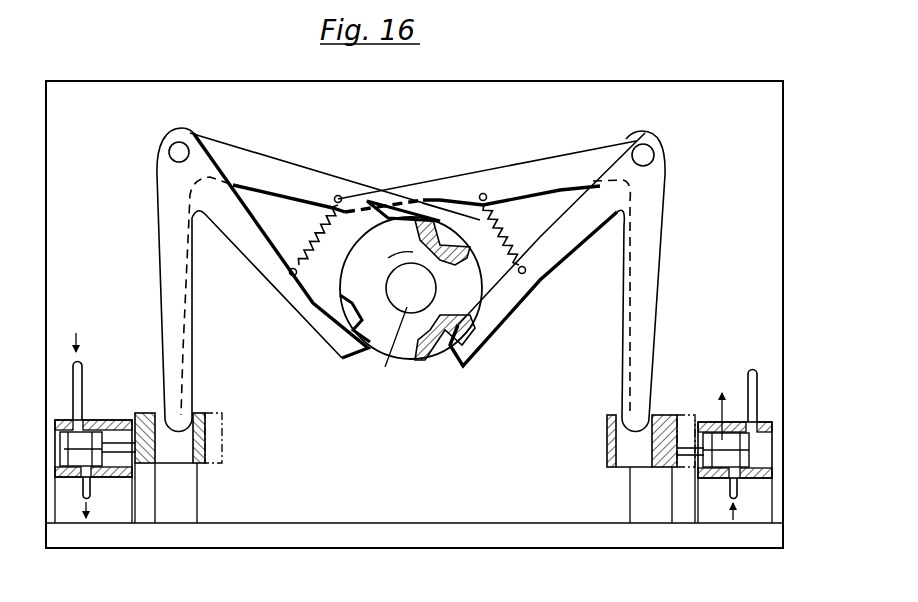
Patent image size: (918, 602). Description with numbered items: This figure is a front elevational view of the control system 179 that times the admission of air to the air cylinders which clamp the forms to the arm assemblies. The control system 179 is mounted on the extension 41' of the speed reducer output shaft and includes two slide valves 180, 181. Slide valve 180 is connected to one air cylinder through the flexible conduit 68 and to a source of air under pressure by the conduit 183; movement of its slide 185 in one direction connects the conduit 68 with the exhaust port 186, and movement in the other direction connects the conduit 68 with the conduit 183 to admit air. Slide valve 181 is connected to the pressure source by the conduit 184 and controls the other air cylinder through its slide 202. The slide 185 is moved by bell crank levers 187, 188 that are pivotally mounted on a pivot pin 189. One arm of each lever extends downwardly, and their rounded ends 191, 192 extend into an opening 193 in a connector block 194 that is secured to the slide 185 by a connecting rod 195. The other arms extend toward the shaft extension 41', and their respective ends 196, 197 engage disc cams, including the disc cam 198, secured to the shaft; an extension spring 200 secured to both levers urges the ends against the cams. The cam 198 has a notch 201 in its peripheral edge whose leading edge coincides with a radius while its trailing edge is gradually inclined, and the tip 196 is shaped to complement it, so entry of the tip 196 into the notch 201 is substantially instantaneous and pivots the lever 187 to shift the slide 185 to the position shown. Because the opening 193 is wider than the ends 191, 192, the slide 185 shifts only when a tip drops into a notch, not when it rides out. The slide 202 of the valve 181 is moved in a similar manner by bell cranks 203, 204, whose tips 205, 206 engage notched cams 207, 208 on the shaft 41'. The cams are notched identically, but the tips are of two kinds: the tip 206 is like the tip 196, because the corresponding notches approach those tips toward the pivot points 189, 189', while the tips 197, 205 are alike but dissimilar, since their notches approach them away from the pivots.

The control system 179 is at (571, 78).
The pivot point 189' is at (254, 267).
The pivot pin 189 is at (570, 271).
The bell crank 204 is at (292, 158).
The bell crank lever 188 is at (527, 162).
The end of lever 188 197 is at (390, 203).
The tip of bell crank 204 206 is at (450, 218).
The notched cam 208 is at (463, 232).
The extension spring 200 is at (512, 242).
The bell crank 203 is at (257, 266).
The notched cam 207 is at (345, 300).
The tip of bell crank 203 205 is at (348, 364).
The extension of output shaft 41' is at (411, 308).
The disc cam 198 is at (418, 372).
The notch 201 is at (445, 370).
The end of lever 187 196 is at (458, 362).
The bell crank lever 187 is at (485, 312).
The conduit 184 is at (85, 376).
The slide valve 181 is at (88, 420).
The slide 202 is at (65, 455).
The opening 193 is at (618, 466).
The rounded end 192 is at (608, 430).
The rounded end 191 is at (620, 452).
The connector block 194 is at (662, 470).
The exhaust port 186 is at (706, 437).
The slide valve 180 is at (738, 420).
The conduit 183 is at (752, 372).
The flexible conduit 68 is at (728, 494).
The connecting rod 195 is at (690, 460).
The slide 185 is at (750, 456).